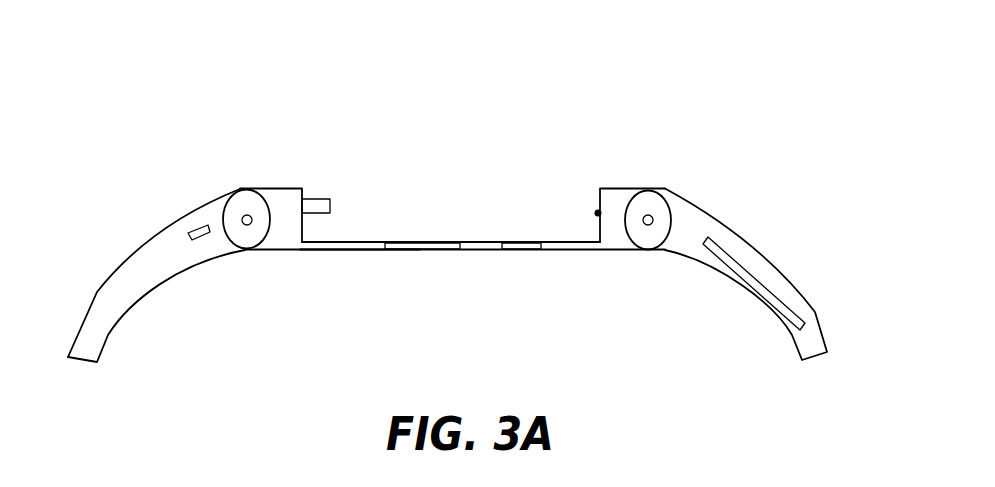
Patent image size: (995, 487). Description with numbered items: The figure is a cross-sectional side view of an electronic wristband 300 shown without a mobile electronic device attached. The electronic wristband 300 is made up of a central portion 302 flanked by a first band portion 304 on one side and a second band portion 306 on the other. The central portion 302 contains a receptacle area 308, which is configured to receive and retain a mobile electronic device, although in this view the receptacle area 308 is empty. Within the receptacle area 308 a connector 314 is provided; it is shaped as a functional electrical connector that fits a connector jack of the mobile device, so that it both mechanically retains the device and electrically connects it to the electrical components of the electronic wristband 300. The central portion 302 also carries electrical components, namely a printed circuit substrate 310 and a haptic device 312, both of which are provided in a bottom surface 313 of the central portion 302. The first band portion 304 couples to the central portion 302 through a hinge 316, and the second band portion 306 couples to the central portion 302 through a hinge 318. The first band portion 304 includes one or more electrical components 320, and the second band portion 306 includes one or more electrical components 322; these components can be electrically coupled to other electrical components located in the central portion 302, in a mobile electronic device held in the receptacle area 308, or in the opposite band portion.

The electronic wristband 300 is at (633, 105).
The central portion 302 is at (422, 168).
The first band portion 304 is at (802, 297).
The second band portion 306 is at (103, 307).
The receptacle area 308 is at (493, 207).
The printed circuit substrate 310 is at (417, 247).
The haptic device 312 is at (523, 247).
The bottom surface 313 is at (360, 251).
The connector 314 is at (327, 203).
The hinge 316 is at (648, 202).
The hinge 318 is at (246, 199).
The electrical components 320 is at (752, 272).
The electrical components 322 is at (196, 229).